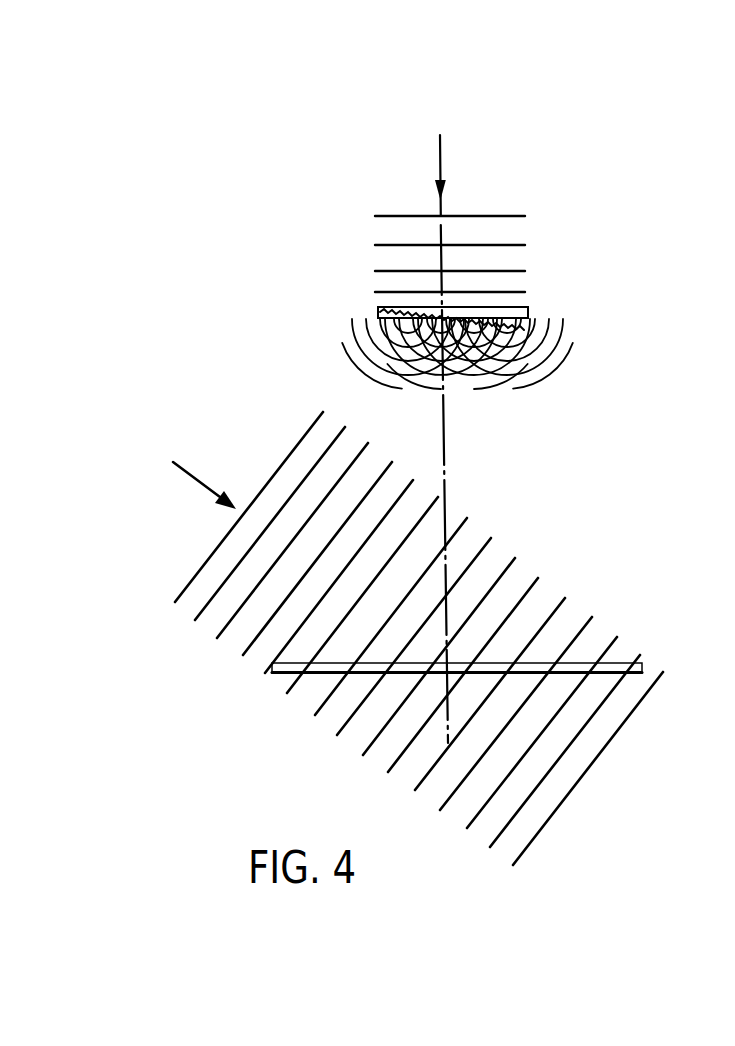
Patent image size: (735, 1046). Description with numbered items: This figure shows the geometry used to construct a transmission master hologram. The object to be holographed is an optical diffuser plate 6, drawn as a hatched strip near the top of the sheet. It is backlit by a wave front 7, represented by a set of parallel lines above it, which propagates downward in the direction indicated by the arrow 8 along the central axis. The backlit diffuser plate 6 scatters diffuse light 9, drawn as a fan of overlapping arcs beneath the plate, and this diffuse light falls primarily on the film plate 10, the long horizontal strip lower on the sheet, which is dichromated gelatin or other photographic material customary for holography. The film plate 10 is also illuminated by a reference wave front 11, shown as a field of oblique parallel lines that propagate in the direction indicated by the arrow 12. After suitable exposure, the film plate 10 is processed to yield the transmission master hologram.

The optical diffuser plate 6 is at (530, 313).
The wave front 7 is at (515, 245).
The arrow 8 is at (440, 153).
The diffuse light 9 is at (513, 368).
The film plate 10 is at (644, 665).
The reference wave front 11 is at (557, 603).
The arrow 12 is at (200, 481).